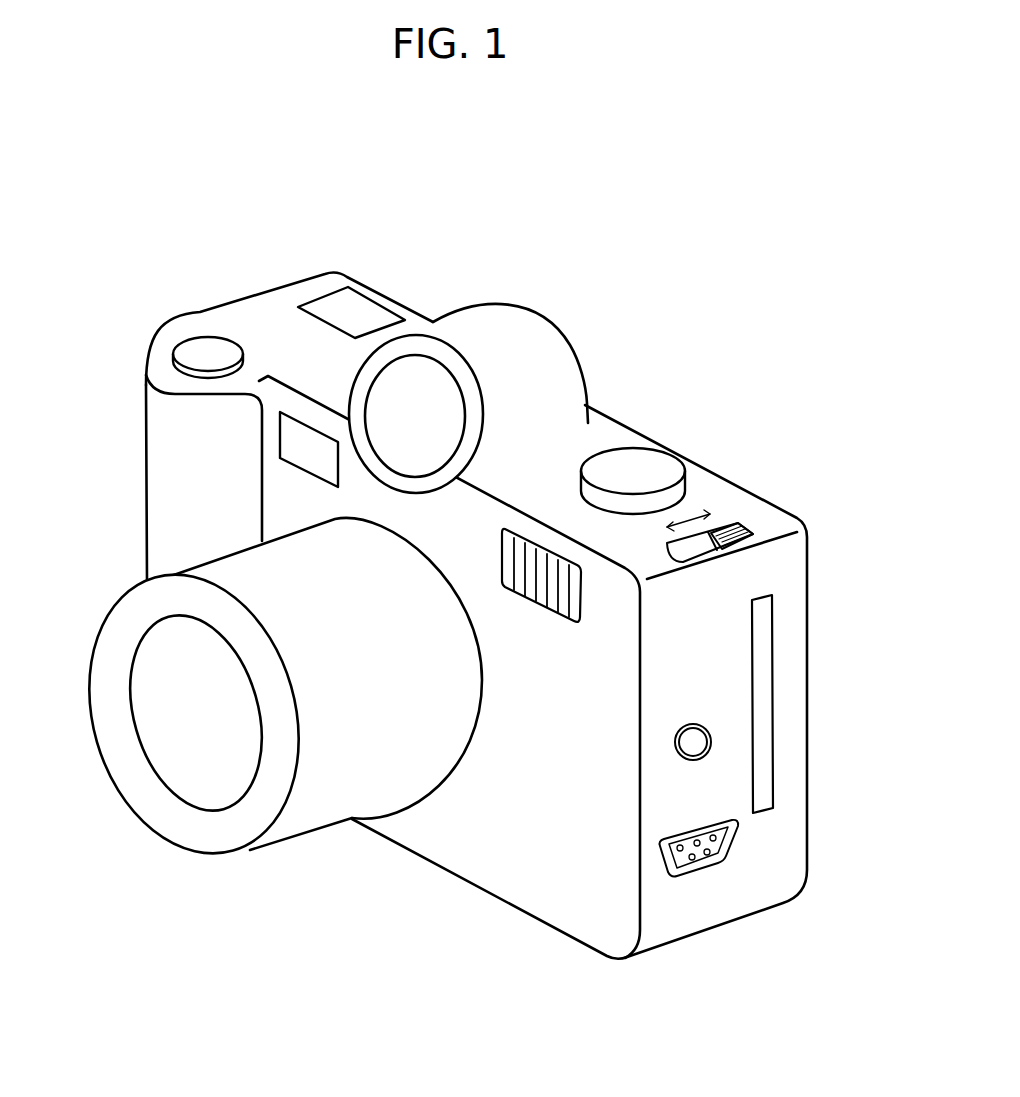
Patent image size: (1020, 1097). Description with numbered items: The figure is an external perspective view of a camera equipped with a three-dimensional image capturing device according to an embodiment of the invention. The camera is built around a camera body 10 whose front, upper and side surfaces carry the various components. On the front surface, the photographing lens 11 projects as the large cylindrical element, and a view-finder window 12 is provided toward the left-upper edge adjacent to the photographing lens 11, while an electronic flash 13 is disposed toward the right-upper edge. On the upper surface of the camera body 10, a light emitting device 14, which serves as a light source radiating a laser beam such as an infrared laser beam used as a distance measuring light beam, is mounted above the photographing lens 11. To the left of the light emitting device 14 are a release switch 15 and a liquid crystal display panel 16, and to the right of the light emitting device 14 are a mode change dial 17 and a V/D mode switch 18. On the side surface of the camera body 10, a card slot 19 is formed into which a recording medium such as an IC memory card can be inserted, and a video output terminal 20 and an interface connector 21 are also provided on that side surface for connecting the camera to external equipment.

The camera body 10 is at (520, 862).
The photographing lens 11 is at (223, 834).
The view-finder window 12 is at (303, 448).
The electronic flash 13 is at (537, 605).
The light emitting device 14 is at (497, 330).
The release switch 15 is at (209, 350).
The liquid crystal display panel 16 is at (353, 310).
The mode change dial 17 is at (632, 470).
The V/D mode switch 18 is at (740, 525).
The card slot 19 is at (763, 643).
The video output terminal 20 is at (697, 742).
The interface connector 21 is at (720, 848).